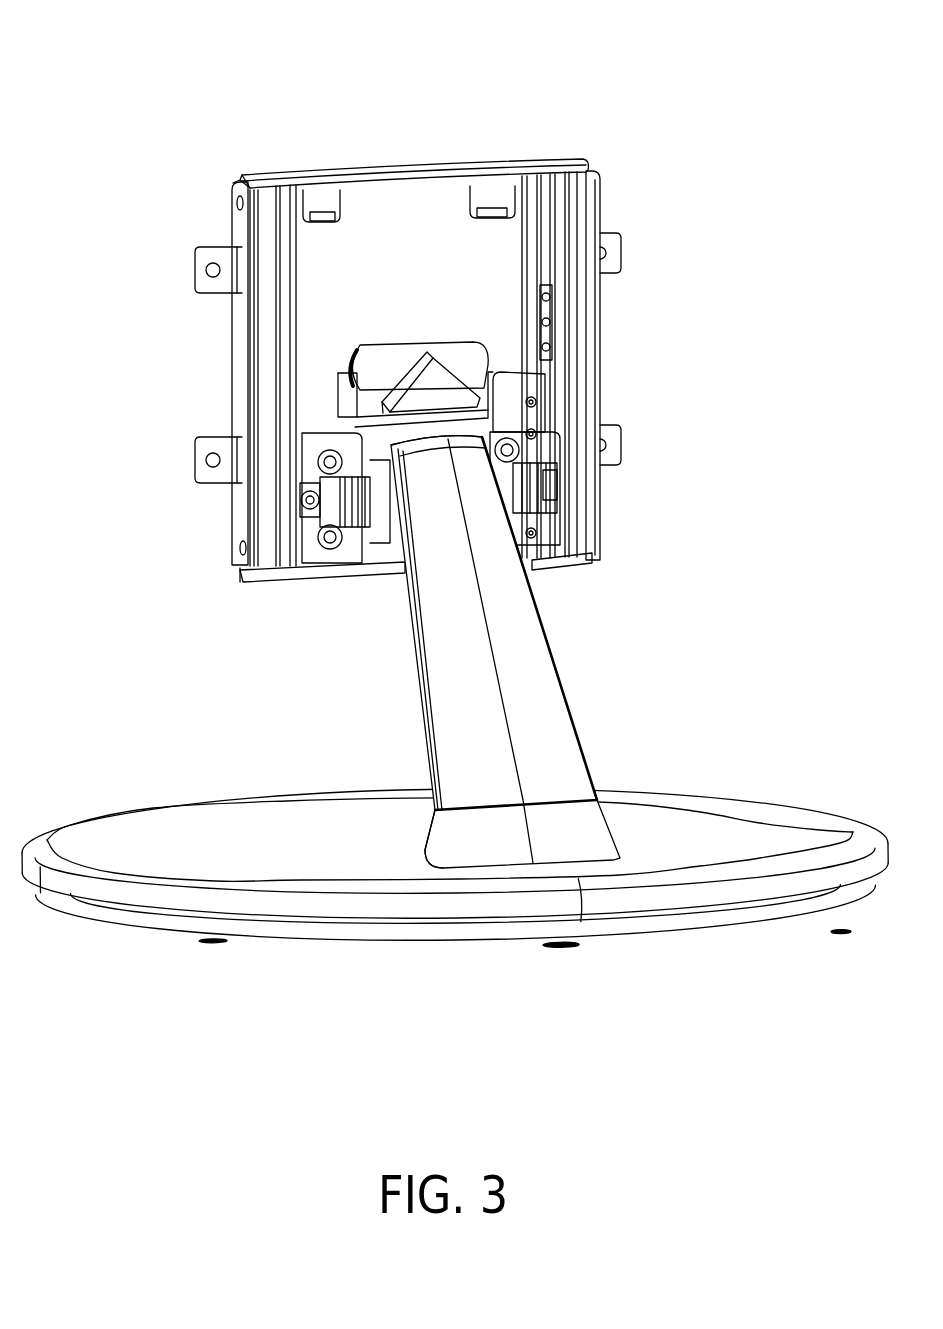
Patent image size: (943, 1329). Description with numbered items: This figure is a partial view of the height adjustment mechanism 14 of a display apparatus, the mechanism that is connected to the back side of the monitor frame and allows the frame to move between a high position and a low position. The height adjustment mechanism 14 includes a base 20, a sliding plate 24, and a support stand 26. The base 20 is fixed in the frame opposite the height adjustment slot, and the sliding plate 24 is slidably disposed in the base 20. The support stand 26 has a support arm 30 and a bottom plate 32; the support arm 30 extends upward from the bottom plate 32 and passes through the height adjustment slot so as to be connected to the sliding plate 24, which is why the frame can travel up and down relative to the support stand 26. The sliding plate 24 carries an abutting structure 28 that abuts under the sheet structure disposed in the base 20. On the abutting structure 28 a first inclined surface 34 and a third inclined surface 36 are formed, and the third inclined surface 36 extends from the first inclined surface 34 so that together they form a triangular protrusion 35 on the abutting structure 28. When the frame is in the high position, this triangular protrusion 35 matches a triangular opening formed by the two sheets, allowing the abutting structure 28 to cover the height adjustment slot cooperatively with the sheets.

The height adjustment mechanism 14 is at (455, 534).
The base 20 is at (237, 369).
The sliding plate 24 is at (512, 392).
The support stand 26 is at (761, 801).
The abutting structure 28 is at (424, 348).
The support arm 30 is at (485, 788).
The bottom plate 32 is at (342, 842).
The first inclined surface 34 is at (458, 366).
The triangular protrusion 35 is at (436, 395).
The third inclined surface 36 is at (405, 370).